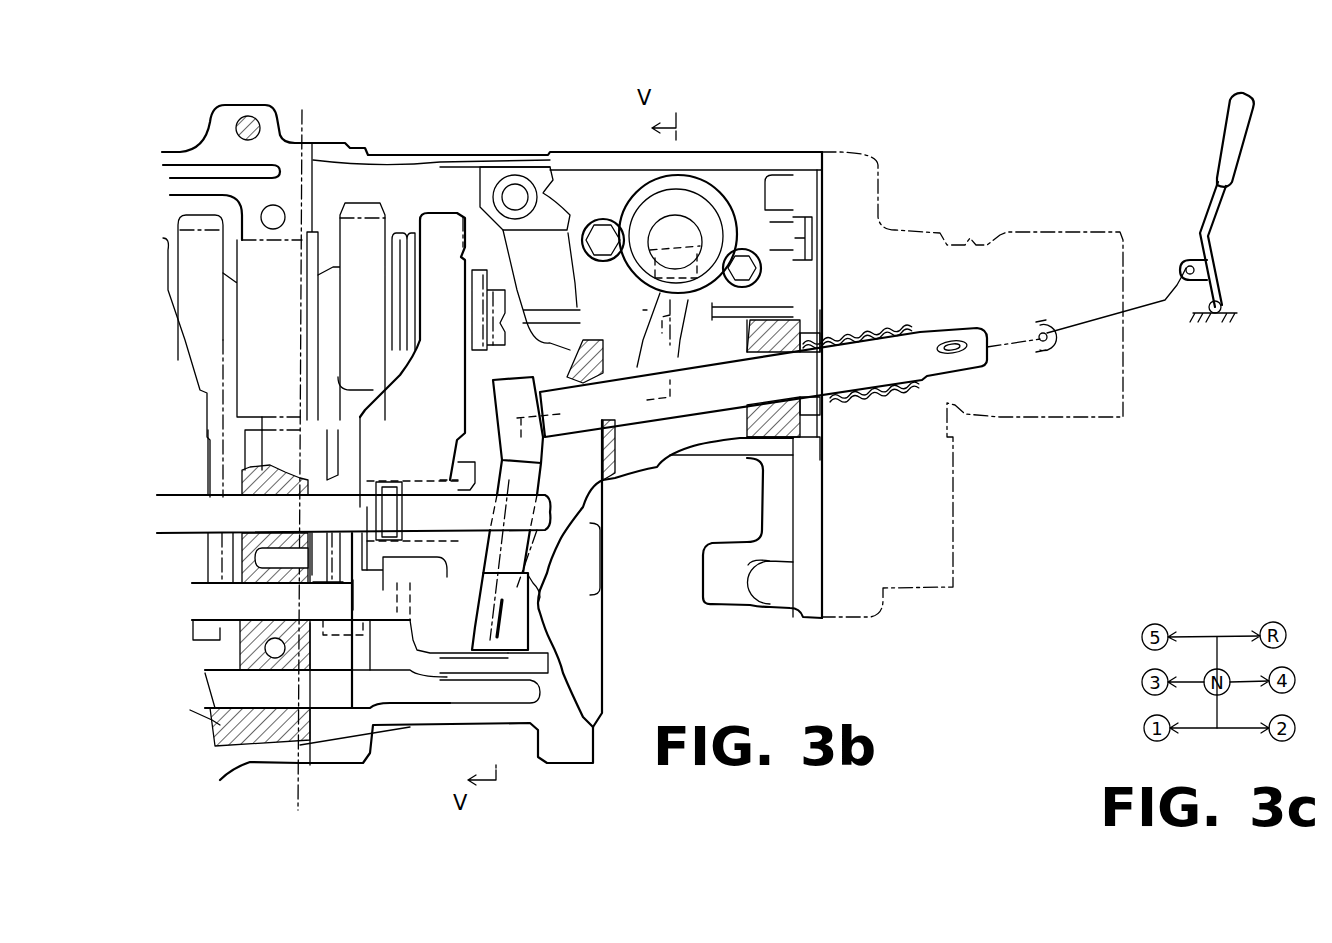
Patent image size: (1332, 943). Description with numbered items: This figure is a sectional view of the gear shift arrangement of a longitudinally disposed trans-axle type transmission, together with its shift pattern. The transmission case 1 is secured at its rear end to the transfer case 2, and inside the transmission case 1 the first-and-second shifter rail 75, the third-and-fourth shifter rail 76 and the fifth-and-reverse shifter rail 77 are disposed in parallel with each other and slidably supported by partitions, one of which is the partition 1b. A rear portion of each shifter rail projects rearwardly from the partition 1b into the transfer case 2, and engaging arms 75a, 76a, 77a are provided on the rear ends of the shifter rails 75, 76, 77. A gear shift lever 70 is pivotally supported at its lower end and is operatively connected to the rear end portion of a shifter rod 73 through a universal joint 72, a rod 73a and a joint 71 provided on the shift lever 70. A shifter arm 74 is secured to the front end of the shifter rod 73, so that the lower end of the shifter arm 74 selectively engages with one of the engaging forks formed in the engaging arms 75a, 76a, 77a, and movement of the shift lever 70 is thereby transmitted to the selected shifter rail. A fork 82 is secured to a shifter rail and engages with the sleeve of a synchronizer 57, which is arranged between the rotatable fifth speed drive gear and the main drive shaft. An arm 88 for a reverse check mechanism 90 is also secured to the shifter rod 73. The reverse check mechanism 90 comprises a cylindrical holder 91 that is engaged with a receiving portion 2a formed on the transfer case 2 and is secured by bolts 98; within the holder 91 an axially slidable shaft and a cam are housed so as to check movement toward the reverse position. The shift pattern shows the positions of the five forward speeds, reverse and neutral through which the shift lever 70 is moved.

The transmission case 1 is at (182, 156).
The partition 1b is at (263, 720).
The transfer case 2 is at (440, 166).
The receiving portion 2a is at (643, 183).
The synchronizer 57 is at (455, 213).
The reverse check mechanism 90 is at (744, 186).
The cylindrical holder 91 is at (633, 228).
The bolts 98 is at (745, 275).
The arm 88 is at (650, 367).
The shifter rod 73 is at (808, 387).
The universal joint 72 is at (1053, 322).
The rod 73a is at (1115, 315).
The gear shift lever 70 is at (1233, 127).
The joint 71 is at (1193, 260).
The fork 82 is at (420, 441).
The fifth-and-reverse shifter rail 77 is at (195, 527).
The shifter arm 74 is at (530, 487).
The engaging arm 77a is at (540, 597).
The third-and-fourth shifter rail 76 is at (252, 612).
The engaging arm 76a is at (393, 637).
The first-and-second shifter rail 75 is at (262, 705).
The engaging arm 75a is at (433, 693).